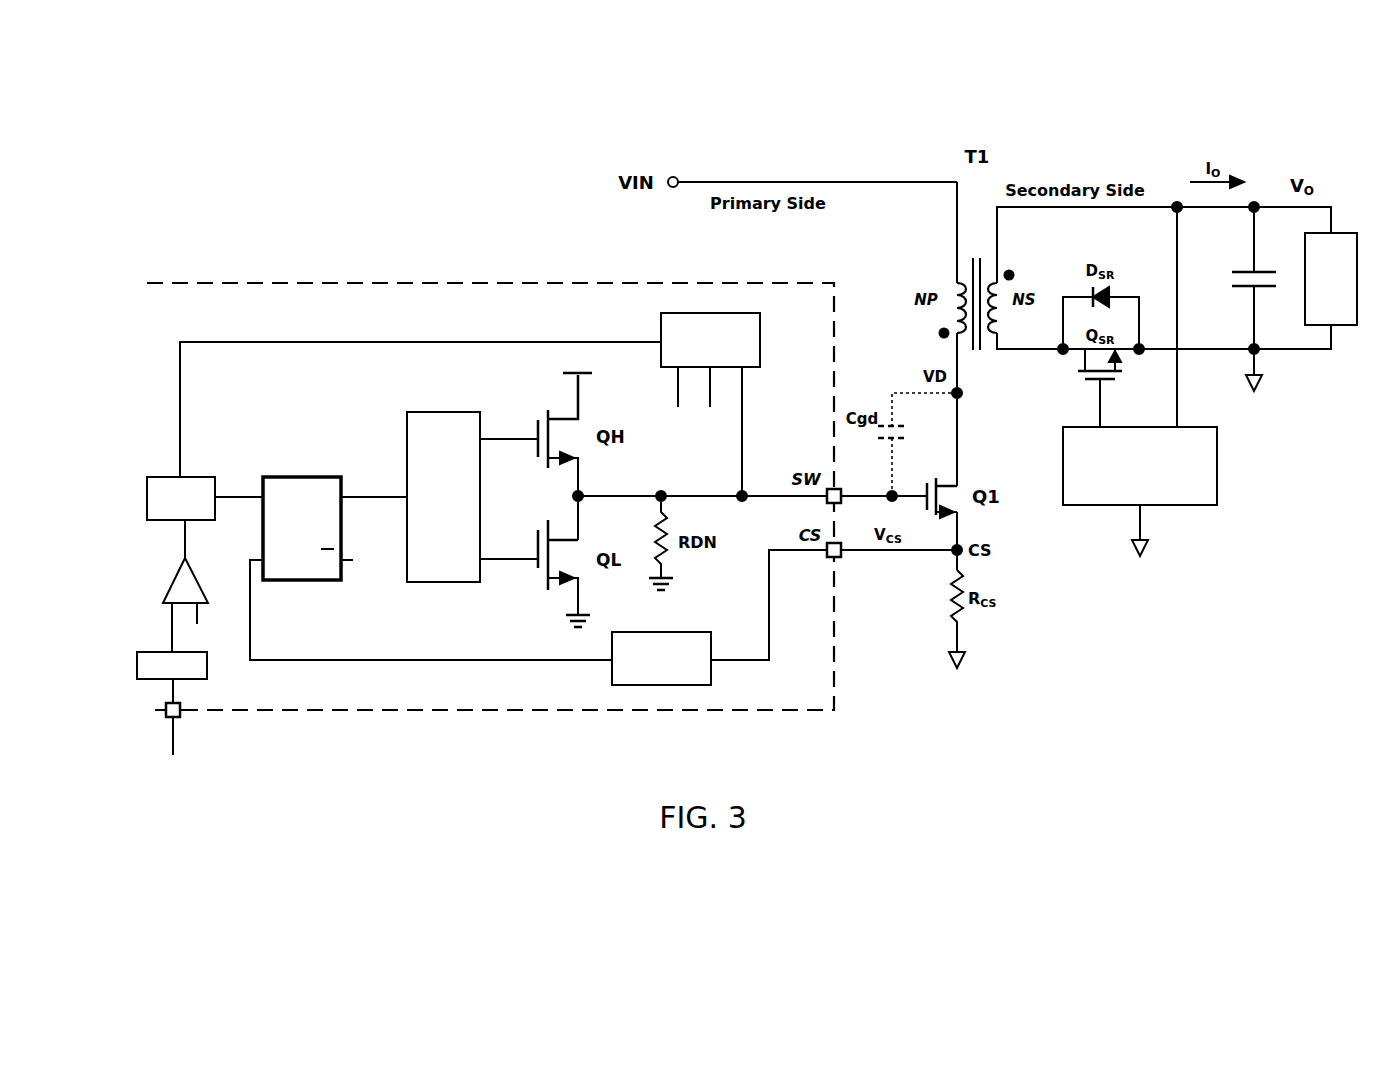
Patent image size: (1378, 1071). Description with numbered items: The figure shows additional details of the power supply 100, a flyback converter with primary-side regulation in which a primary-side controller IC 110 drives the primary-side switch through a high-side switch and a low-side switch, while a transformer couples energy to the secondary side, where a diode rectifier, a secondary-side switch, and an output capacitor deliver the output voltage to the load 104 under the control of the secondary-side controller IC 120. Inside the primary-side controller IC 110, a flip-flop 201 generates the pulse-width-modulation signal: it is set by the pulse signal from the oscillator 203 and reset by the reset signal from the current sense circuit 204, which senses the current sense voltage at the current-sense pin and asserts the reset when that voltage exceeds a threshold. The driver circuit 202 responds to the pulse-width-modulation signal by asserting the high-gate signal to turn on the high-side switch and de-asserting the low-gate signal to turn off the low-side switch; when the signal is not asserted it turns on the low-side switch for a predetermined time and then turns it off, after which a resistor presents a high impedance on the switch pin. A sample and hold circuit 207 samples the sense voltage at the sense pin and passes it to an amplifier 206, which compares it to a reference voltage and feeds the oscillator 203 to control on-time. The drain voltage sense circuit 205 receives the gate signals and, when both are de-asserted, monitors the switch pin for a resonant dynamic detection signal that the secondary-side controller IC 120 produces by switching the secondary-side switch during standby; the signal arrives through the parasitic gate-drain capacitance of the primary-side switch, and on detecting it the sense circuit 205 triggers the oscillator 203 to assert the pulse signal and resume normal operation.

The power supply 100 is at (314, 152).
The primary-side controller IC 110 is at (340, 282).
The flip-flop 201 is at (431, 567).
The driver circuit 202 is at (472, 497).
The oscillator 203 is at (190, 521).
The current sense circuit 204 is at (680, 632).
The drain voltage VD sense circuit 205 is at (760, 343).
The amplifier 206 is at (172, 588).
The sample and hold circuit 207 is at (160, 651).
The secondary-side controller IC 120 is at (1140, 381).
The load 104 is at (1305, 272).